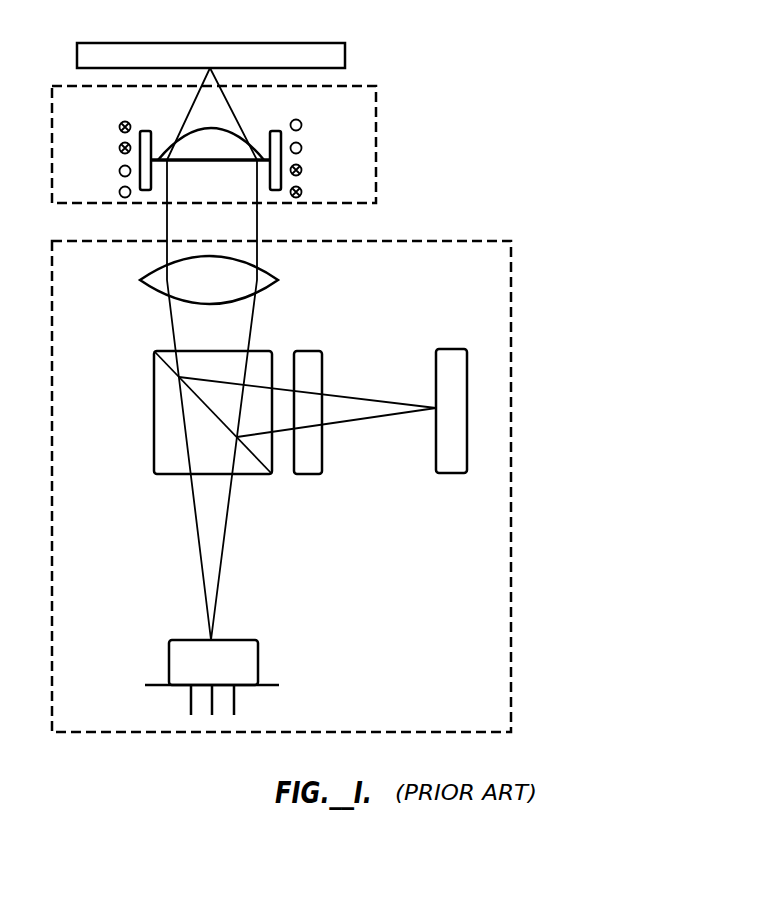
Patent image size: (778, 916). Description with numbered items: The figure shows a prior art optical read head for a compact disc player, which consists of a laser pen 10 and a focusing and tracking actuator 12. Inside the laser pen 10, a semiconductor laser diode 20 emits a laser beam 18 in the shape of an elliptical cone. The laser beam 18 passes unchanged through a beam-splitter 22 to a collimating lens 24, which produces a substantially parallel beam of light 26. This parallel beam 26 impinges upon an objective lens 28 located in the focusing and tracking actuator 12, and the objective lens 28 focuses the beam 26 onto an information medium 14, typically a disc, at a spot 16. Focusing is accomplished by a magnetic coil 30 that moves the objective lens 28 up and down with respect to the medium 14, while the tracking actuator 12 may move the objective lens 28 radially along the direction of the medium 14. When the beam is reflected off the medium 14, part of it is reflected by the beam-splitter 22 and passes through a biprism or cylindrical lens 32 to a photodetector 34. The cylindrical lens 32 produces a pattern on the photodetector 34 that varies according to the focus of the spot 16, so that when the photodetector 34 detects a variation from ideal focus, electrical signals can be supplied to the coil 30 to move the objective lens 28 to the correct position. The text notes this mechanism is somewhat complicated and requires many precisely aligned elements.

The laser pen 10 is at (512, 276).
The focusing and tracking actuator 12 is at (378, 98).
The information medium 14 is at (325, 43).
The spot 16 is at (210, 68).
The laser beam 18 is at (222, 582).
The semiconductor laser diode 20 is at (259, 658).
The beam-splitter 22 is at (154, 440).
The collimating lens 24 is at (156, 288).
The parallel beam of light 26 is at (167, 225).
The objective lens 28 is at (258, 130).
The magnetic coil 30 is at (119, 146).
The cylindrical lens 32 is at (310, 351).
The photodetector 34 is at (450, 349).